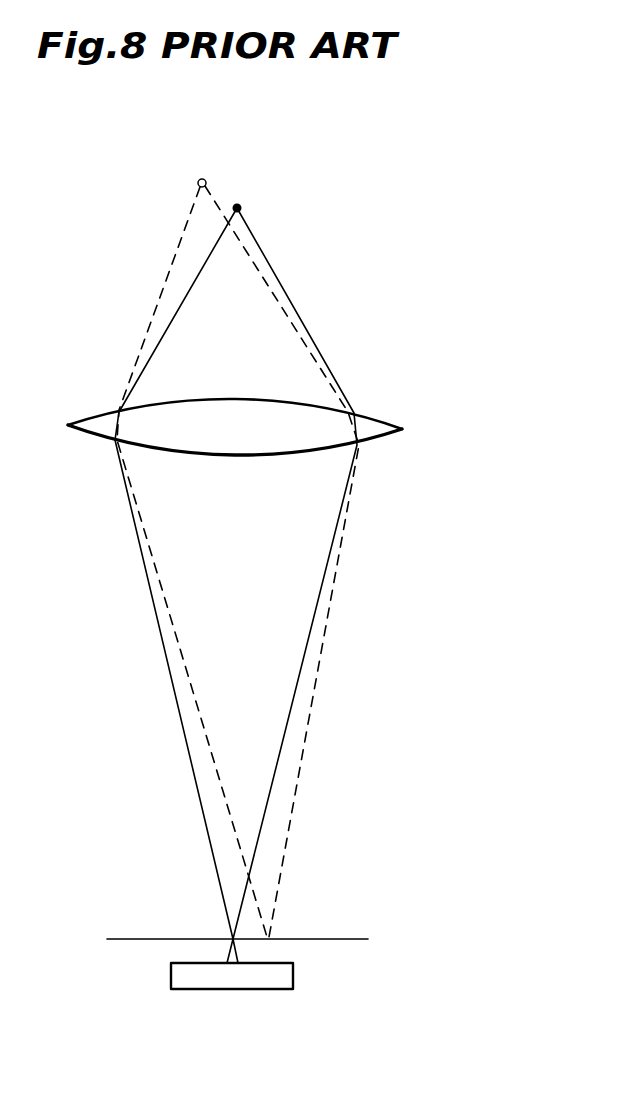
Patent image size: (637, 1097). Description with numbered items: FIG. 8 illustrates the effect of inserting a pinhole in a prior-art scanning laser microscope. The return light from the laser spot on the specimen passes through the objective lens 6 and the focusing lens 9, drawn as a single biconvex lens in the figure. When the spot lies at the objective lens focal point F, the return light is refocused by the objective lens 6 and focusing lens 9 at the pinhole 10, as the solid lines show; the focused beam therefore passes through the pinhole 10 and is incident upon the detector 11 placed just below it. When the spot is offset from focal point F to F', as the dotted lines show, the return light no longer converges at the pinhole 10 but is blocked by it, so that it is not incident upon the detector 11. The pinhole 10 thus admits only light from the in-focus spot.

The objective lens 6 is at (280, 420).
The focusing lens 9 is at (395, 425).
The objective lens focal point F is at (236, 570).
The offset focal point F' is at (238, 529).
The pinhole 10 is at (343, 938).
The detector 11 is at (275, 990).